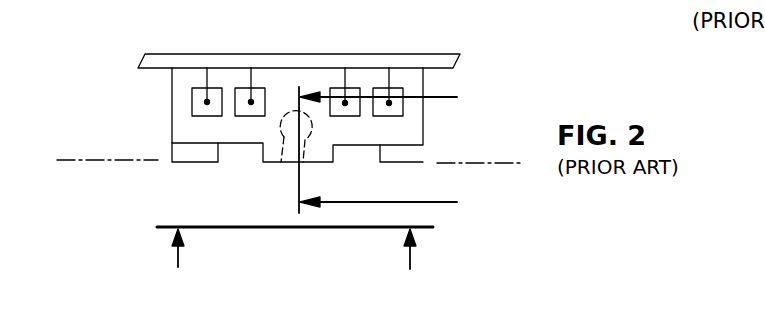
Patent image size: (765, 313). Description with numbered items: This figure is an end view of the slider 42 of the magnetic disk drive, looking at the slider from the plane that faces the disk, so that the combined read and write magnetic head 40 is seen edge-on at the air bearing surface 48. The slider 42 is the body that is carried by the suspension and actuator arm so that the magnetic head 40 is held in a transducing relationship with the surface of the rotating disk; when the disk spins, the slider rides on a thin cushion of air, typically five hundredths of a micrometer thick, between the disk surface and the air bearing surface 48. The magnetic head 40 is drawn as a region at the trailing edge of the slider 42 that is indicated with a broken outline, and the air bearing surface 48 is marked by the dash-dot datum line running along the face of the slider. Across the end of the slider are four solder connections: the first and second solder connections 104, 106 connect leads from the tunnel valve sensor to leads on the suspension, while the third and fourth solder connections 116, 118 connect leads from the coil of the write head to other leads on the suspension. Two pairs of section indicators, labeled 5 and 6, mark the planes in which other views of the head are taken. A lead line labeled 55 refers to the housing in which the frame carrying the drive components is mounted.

The slider 42 is at (172, 101).
The first solder connection 104 is at (192, 88).
The third solder connection 116 is at (233, 88).
The fourth solder connection 118 is at (330, 88).
The second solder connection 106 is at (373, 88).
The air bearing surface (ABS) 48 is at (88, 162).
The magnetic head 40 is at (282, 166).
The section line 6- 6 is at (388, 151).
The section line 5- 5 is at (295, 264).
The housing 55 is at (547, 312).